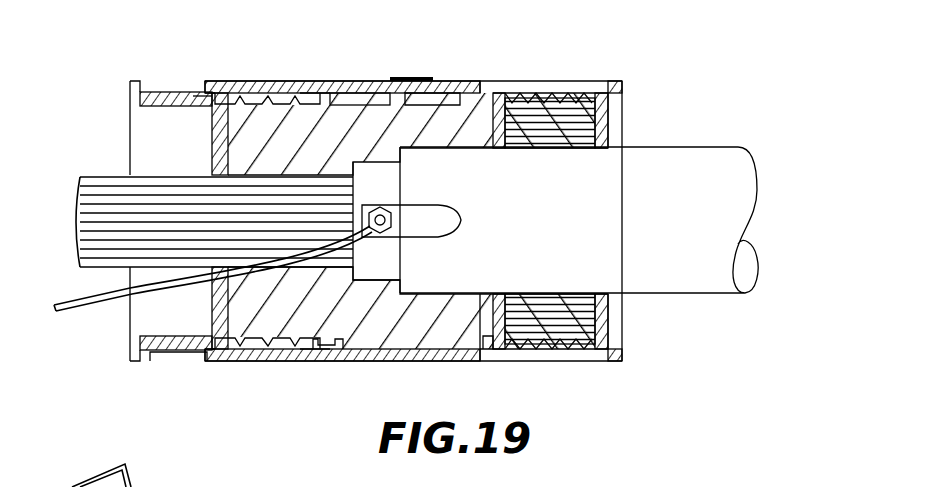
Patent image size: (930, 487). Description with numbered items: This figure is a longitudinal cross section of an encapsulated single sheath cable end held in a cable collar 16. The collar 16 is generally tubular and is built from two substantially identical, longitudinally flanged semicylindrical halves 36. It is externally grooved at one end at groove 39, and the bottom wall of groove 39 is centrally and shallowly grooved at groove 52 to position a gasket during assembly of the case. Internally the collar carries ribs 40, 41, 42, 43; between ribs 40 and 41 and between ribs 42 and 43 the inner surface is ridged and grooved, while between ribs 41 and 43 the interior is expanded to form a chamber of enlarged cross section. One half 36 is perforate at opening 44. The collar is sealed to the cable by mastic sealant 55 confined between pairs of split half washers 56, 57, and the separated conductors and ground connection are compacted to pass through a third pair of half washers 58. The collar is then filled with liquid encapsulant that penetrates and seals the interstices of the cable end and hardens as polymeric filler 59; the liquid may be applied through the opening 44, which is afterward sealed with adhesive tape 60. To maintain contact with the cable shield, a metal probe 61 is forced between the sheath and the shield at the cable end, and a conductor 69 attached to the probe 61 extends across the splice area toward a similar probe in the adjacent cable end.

The cable collar 16 is at (566, 80).
The semicylindrical half 36 is at (267, 80).
The groove 39 is at (147, 88).
The rib 40 is at (623, 325).
The rib 41 is at (488, 362).
The rib 42 is at (343, 362).
The rib 43 is at (214, 330).
The opening 44 is at (425, 80).
The groove 52 is at (176, 92).
The mastic sealant 55 is at (530, 90).
The split half washers 56 is at (497, 90).
The split half washers 57 is at (609, 112).
The half washers 58 is at (214, 134).
The polymeric filler 59 is at (361, 92).
The adhesive tape 60 is at (396, 78).
The metal probe 61 is at (448, 210).
The conductor 69 is at (92, 306).